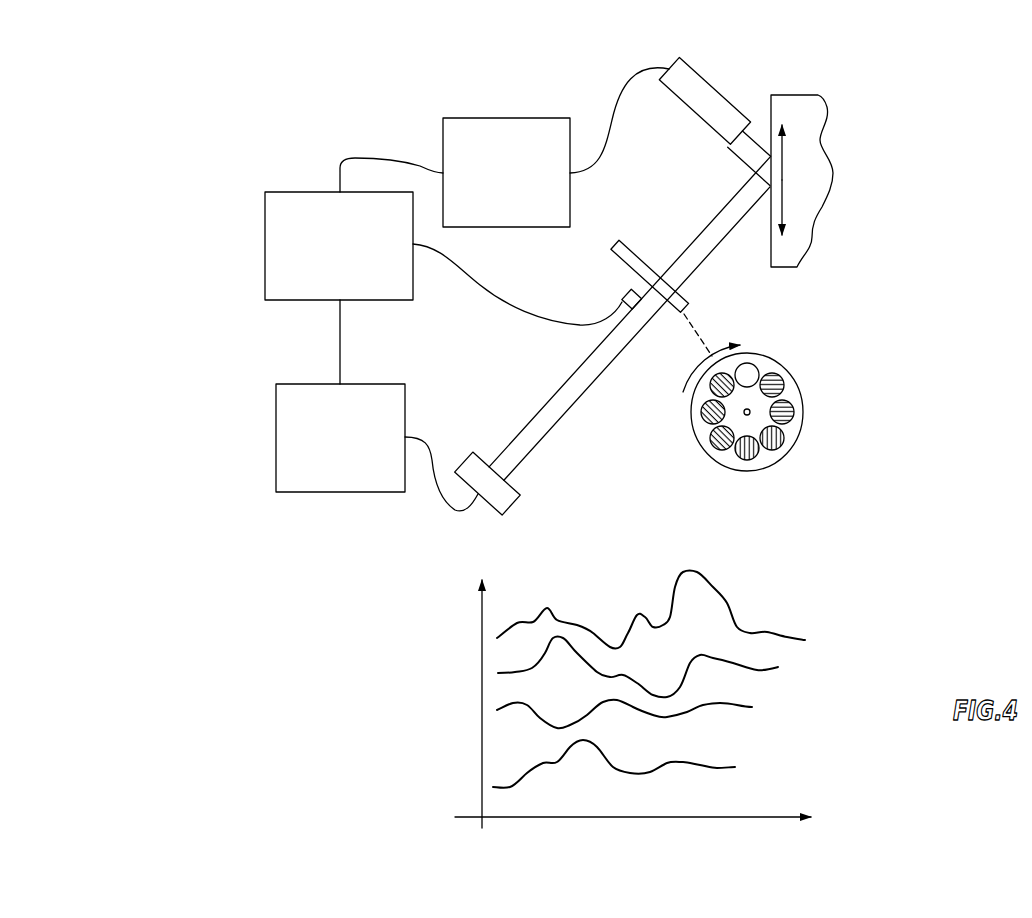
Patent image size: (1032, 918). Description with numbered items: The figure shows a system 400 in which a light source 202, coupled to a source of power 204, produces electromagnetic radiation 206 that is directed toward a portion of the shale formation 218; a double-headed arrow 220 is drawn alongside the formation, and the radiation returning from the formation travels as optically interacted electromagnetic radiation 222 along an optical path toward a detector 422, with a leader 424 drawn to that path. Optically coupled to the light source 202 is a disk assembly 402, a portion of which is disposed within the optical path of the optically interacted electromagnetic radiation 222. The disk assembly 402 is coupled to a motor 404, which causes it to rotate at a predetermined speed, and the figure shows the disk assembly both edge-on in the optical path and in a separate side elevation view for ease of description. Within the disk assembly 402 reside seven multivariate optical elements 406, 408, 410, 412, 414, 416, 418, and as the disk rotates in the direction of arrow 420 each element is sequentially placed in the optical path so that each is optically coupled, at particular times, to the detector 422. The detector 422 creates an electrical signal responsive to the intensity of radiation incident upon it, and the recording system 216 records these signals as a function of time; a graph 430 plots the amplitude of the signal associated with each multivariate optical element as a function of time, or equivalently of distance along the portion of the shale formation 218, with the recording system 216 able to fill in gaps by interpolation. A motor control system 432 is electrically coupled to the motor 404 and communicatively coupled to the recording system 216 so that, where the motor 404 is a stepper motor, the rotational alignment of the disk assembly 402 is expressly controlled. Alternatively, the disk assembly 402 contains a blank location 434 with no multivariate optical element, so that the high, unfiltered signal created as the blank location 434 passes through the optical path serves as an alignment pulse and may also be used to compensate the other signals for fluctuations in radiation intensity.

The system 400 is at (295, 106).
The light source 202 is at (692, 83).
The source of power 204 is at (525, 212).
The motor control system 432 is at (358, 285).
The recording system 216 is at (358, 478).
The electromagnetic radiation 206 is at (747, 147).
The portion of the shale formation 218 is at (810, 118).
The specimen motion direction 220 is at (784, 160).
The optically interacted electromagnetic radiation 222 is at (723, 223).
The detector 422 is at (505, 500).
The shaft 424 is at (508, 457).
The motor 404 is at (627, 292).
The disk assembly 402 is at (618, 243).
The blank location 434 is at (748, 367).
The multivariate optical element 406 is at (773, 380).
The multivariate optical element 408 is at (787, 413).
The multivariate optical element 410 is at (777, 440).
The multivariate optical element 412 is at (752, 452).
The multivariate optical element 414 is at (725, 440).
The multivariate optical element 416 is at (707, 417).
The multivariate optical element 418 is at (710, 387).
The arrow 420 is at (712, 347).
The graph 430 is at (448, 685).